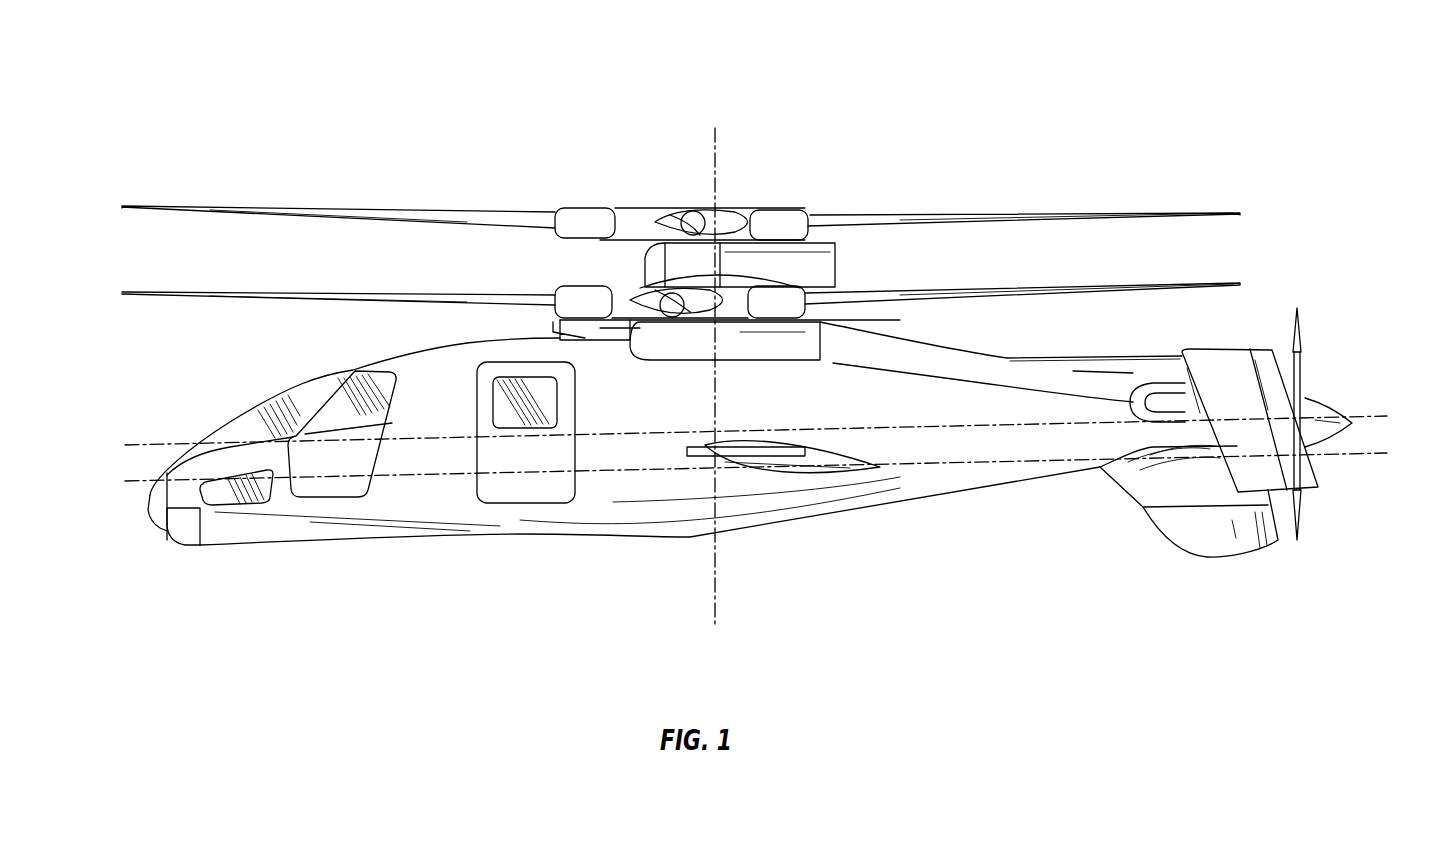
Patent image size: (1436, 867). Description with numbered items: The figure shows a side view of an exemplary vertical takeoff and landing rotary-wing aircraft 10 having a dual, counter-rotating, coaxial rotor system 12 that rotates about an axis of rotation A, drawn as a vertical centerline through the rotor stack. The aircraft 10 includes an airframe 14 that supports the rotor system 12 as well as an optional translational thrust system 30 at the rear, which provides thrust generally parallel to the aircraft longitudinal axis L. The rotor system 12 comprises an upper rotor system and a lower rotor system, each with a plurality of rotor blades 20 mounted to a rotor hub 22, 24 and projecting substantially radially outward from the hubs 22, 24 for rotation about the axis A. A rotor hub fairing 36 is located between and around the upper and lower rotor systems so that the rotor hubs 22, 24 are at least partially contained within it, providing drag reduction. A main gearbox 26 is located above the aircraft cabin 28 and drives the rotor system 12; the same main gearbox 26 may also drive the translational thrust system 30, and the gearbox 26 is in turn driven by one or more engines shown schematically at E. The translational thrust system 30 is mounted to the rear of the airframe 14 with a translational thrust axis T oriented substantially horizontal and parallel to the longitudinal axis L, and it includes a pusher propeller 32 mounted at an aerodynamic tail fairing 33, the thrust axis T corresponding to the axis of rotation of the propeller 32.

The rotary-wing aircraft 10 is at (897, 88).
The coaxial rotor system 12 is at (792, 178).
The airframe 14 is at (352, 370).
The rotor blades 20 is at (1058, 283).
The upper rotor hub 22 is at (655, 205).
The lower rotor hub 24 is at (650, 287).
The main gearbox 26 is at (685, 343).
The aircraft cabin 28 is at (433, 513).
The translational thrust system 30 is at (1300, 300).
The pusher propeller 32 is at (1304, 505).
The aerodynamic tail fairing 33 is at (1177, 528).
The rotor hub fairing 36 is at (838, 257).
The engines E is at (810, 342).
The translational thrust axis T is at (743, 435).
The aircraft longitudinal axis L is at (744, 474).
The axis of rotation A is at (714, 394).